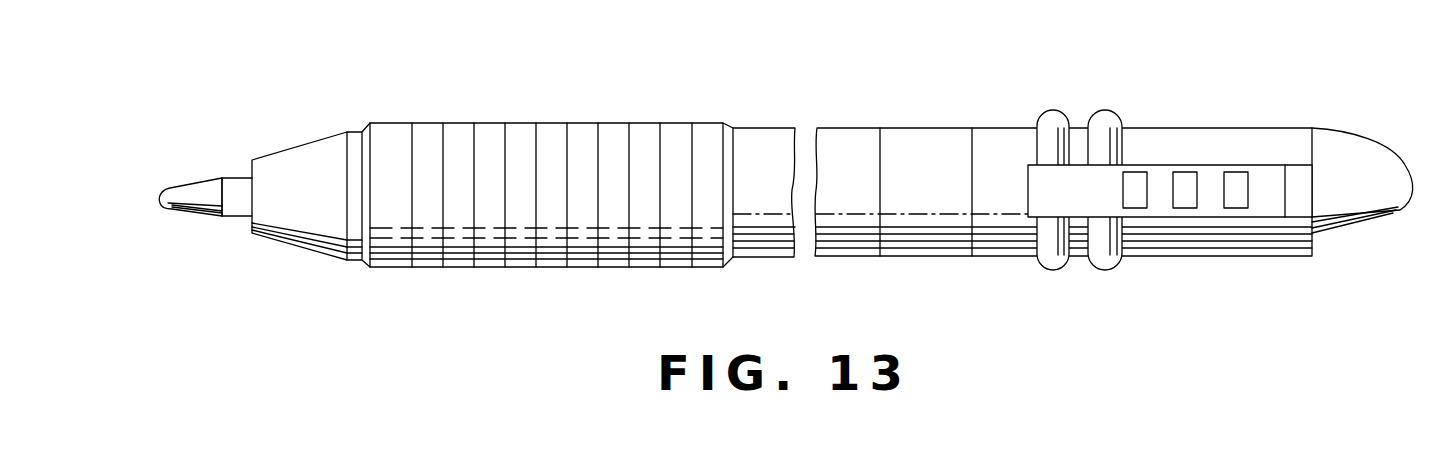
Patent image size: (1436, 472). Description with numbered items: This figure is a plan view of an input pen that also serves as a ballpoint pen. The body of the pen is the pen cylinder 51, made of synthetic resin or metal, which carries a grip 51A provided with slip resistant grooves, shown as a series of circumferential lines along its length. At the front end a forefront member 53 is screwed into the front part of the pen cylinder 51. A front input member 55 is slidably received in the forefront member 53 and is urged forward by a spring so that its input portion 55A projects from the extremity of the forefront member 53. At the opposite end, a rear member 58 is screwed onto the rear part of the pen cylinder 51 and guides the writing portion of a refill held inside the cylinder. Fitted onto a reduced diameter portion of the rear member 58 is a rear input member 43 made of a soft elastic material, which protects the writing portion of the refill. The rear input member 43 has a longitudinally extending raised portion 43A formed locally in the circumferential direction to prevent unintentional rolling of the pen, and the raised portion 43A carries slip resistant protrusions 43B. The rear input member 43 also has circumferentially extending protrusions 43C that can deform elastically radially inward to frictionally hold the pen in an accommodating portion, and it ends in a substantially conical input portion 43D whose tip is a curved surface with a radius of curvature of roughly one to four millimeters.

The rear input member 43 is at (1202, 170).
The raised portion 43A is at (1037, 178).
The slip resistant protrusions 43B is at (1237, 178).
The protrusions 43C is at (1110, 111).
The input portion 43D is at (1384, 222).
The pen cylinder 51 is at (763, 137).
The grip 51A is at (520, 133).
The forefront member 53 is at (300, 147).
The front input member 55 is at (200, 178).
The input portion 55A is at (184, 210).
The rear member 58 is at (926, 140).